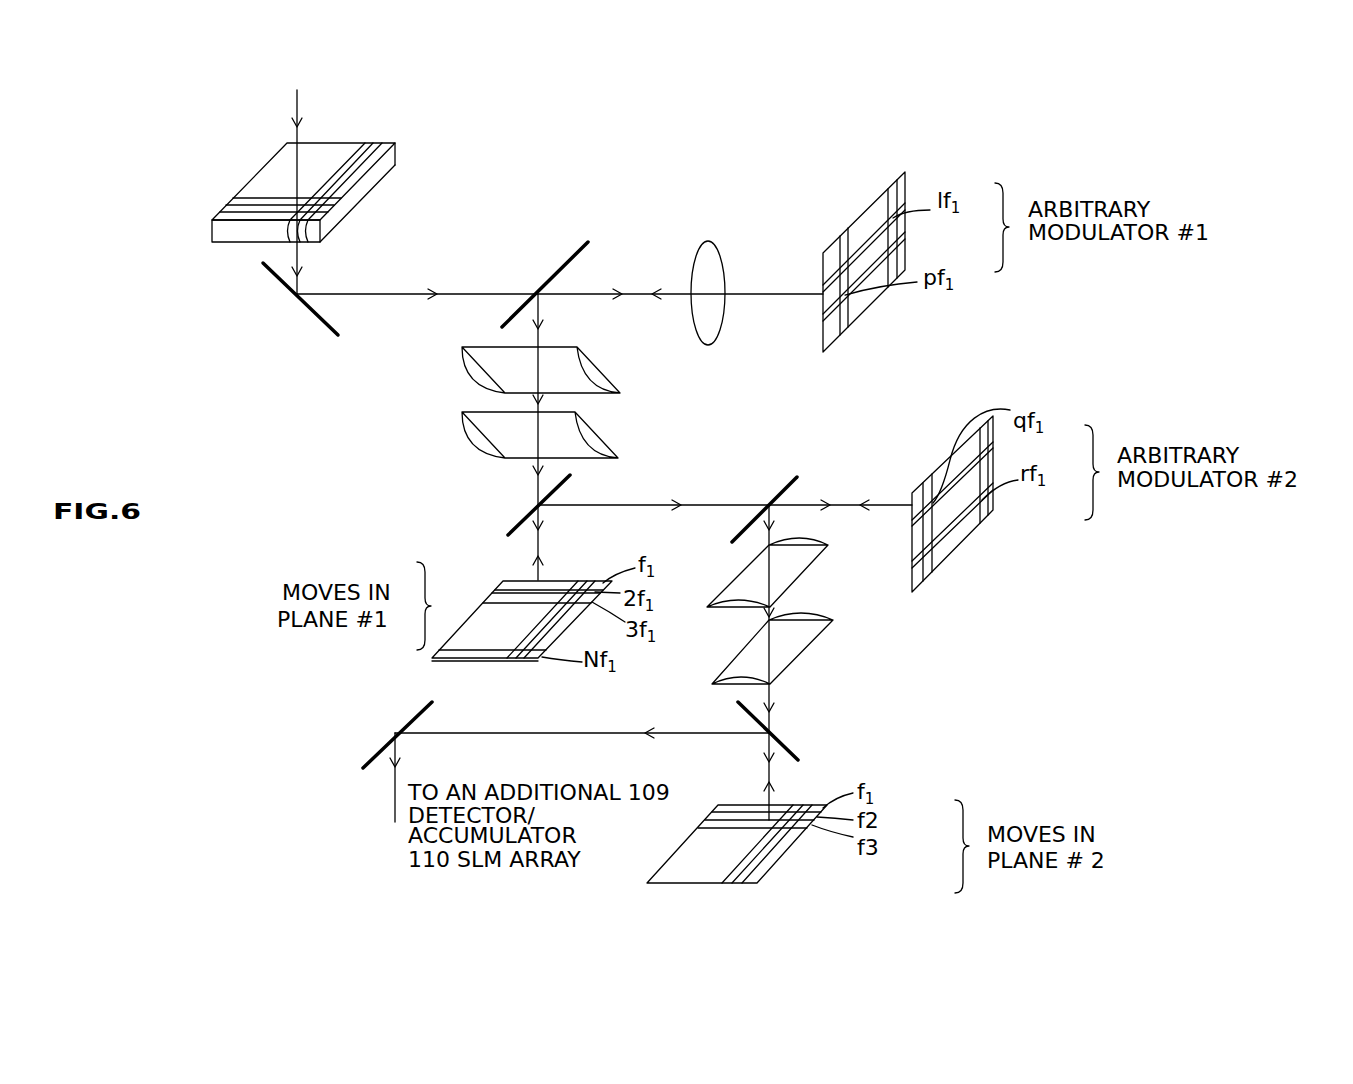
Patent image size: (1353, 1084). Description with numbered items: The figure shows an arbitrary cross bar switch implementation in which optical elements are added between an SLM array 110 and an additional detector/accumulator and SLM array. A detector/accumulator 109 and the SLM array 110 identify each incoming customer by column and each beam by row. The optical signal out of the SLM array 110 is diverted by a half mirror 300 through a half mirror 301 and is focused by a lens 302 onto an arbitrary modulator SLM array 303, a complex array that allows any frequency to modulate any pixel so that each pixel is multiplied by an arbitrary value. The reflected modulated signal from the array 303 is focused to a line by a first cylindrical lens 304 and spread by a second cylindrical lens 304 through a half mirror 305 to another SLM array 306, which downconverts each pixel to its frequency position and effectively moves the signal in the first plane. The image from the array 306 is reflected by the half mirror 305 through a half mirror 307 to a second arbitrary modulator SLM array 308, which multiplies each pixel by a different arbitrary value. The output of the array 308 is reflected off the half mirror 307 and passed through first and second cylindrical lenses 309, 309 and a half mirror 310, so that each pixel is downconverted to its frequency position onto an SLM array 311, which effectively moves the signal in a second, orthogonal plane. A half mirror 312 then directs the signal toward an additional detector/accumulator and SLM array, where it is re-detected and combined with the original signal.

The detector/accumulator 109 is at (365, 146).
The SLM array 110 is at (232, 243).
The half mirror 300 is at (280, 280).
The half mirror 301 is at (547, 283).
The lens 302 is at (723, 257).
The arbitrary modulator SLM array 303 is at (845, 333).
The cylindrical lenses 304 is at (450, 423).
The half mirror 305 is at (523, 515).
The SLM array 306 is at (470, 660).
The half mirror 307 is at (792, 482).
The arbitrary modulator SLM array 308 is at (943, 563).
The cylindrical lenses 309 is at (815, 593).
The half mirror 310 is at (833, 733).
The SLM array 311 is at (745, 885).
The half mirror 312 is at (385, 745).